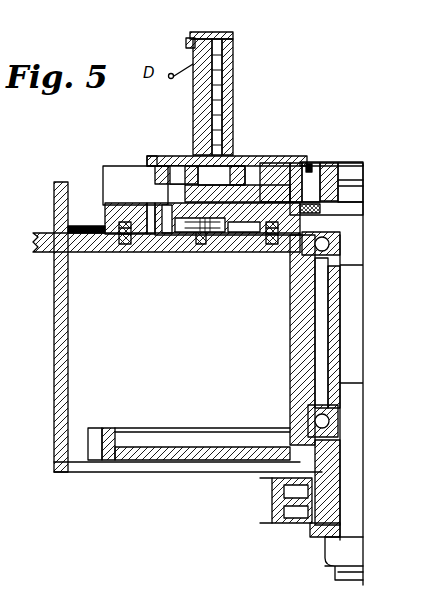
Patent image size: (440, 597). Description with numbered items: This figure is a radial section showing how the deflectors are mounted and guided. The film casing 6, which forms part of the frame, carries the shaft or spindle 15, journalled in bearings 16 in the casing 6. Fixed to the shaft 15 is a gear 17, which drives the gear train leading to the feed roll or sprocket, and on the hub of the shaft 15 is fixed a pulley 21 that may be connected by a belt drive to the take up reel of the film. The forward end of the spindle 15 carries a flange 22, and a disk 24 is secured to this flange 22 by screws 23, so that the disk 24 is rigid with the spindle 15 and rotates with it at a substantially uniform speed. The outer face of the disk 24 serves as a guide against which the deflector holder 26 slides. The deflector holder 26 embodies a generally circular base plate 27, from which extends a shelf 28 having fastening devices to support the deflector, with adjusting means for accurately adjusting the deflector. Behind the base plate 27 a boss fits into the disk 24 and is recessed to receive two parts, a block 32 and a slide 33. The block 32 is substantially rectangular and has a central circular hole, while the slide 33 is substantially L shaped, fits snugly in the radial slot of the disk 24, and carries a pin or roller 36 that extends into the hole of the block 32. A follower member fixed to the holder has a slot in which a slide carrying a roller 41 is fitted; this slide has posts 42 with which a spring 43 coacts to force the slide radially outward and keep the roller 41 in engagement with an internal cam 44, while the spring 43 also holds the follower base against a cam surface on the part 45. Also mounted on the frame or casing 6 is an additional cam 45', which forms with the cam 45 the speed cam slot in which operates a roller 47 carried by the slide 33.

The casing 6 is at (54, 365).
The shaft or spindle 15 is at (352, 421).
The bearings 16 is at (302, 250).
The gear 17 is at (112, 428).
The pulley 21 is at (272, 500).
The flange 22 is at (357, 209).
The screws 23 is at (310, 164).
The disk 24 is at (103, 175).
The deflector holder 26 is at (233, 133).
The base plate 27 is at (148, 157).
The shelf 28 is at (233, 42).
The block 32 is at (168, 178).
The slide 33 is at (230, 186).
The pin or roller 36 is at (172, 156).
The roller 41 is at (165, 203).
The posts 42 is at (172, 246).
The spring 43 is at (205, 246).
The internal cam 44 is at (105, 222).
The part 45 is at (200, 253).
The additional cam 45' is at (253, 250).
The roller 47 is at (268, 200).